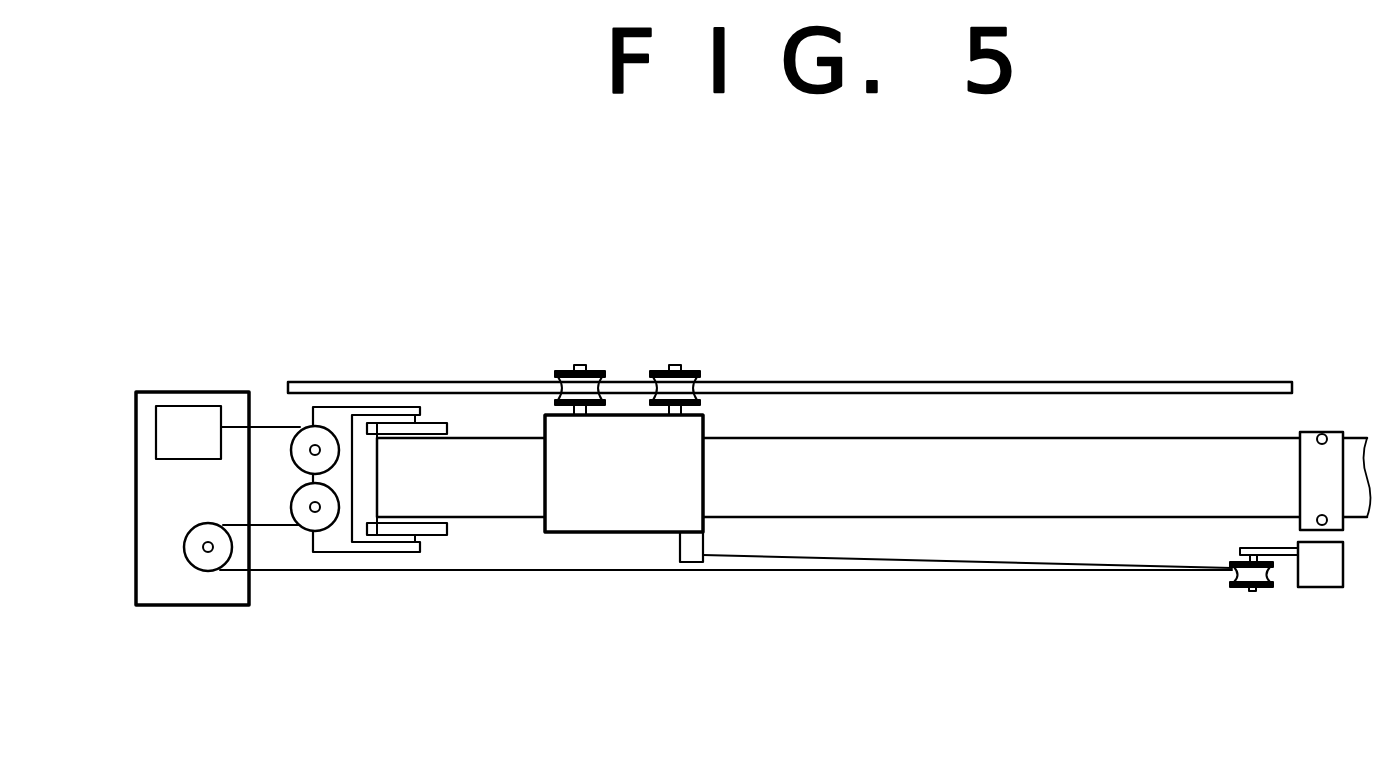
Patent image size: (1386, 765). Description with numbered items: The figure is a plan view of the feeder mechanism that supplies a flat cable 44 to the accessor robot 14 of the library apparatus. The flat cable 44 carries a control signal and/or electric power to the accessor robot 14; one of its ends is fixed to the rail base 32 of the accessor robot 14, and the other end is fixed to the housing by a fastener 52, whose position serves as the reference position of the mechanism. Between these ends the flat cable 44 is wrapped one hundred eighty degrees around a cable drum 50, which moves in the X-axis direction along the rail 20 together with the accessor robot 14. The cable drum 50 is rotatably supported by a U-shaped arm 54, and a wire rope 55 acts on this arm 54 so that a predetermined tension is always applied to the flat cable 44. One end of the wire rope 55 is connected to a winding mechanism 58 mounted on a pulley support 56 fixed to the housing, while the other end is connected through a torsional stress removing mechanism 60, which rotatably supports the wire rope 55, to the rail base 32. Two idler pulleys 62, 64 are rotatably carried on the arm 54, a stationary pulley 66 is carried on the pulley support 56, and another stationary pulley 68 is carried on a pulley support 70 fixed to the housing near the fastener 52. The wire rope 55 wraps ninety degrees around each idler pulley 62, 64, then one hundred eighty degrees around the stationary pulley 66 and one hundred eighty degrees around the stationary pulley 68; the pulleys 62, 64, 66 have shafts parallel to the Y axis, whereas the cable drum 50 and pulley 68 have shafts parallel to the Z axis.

The accessor robot 14 is at (693, 428).
The rail base 32 is at (624, 473).
The rail 20 is at (957, 388).
The flat cable 44 is at (505, 497).
The cable drum 50 is at (435, 425).
The fastener 52 is at (1330, 445).
The U-shaped arm 54 is at (338, 412).
The wire rope 55 is at (420, 572).
The pulley support 56 is at (175, 595).
The winding mechanism 58 is at (178, 415).
The torsional stress removing mechanism 60 is at (682, 548).
The idler pulley 62 is at (298, 452).
The idler pulley 64 is at (308, 522).
The stationary pulley 66 is at (212, 568).
The stationary pulley 68 is at (1237, 585).
The pulley support 70 is at (1318, 582).